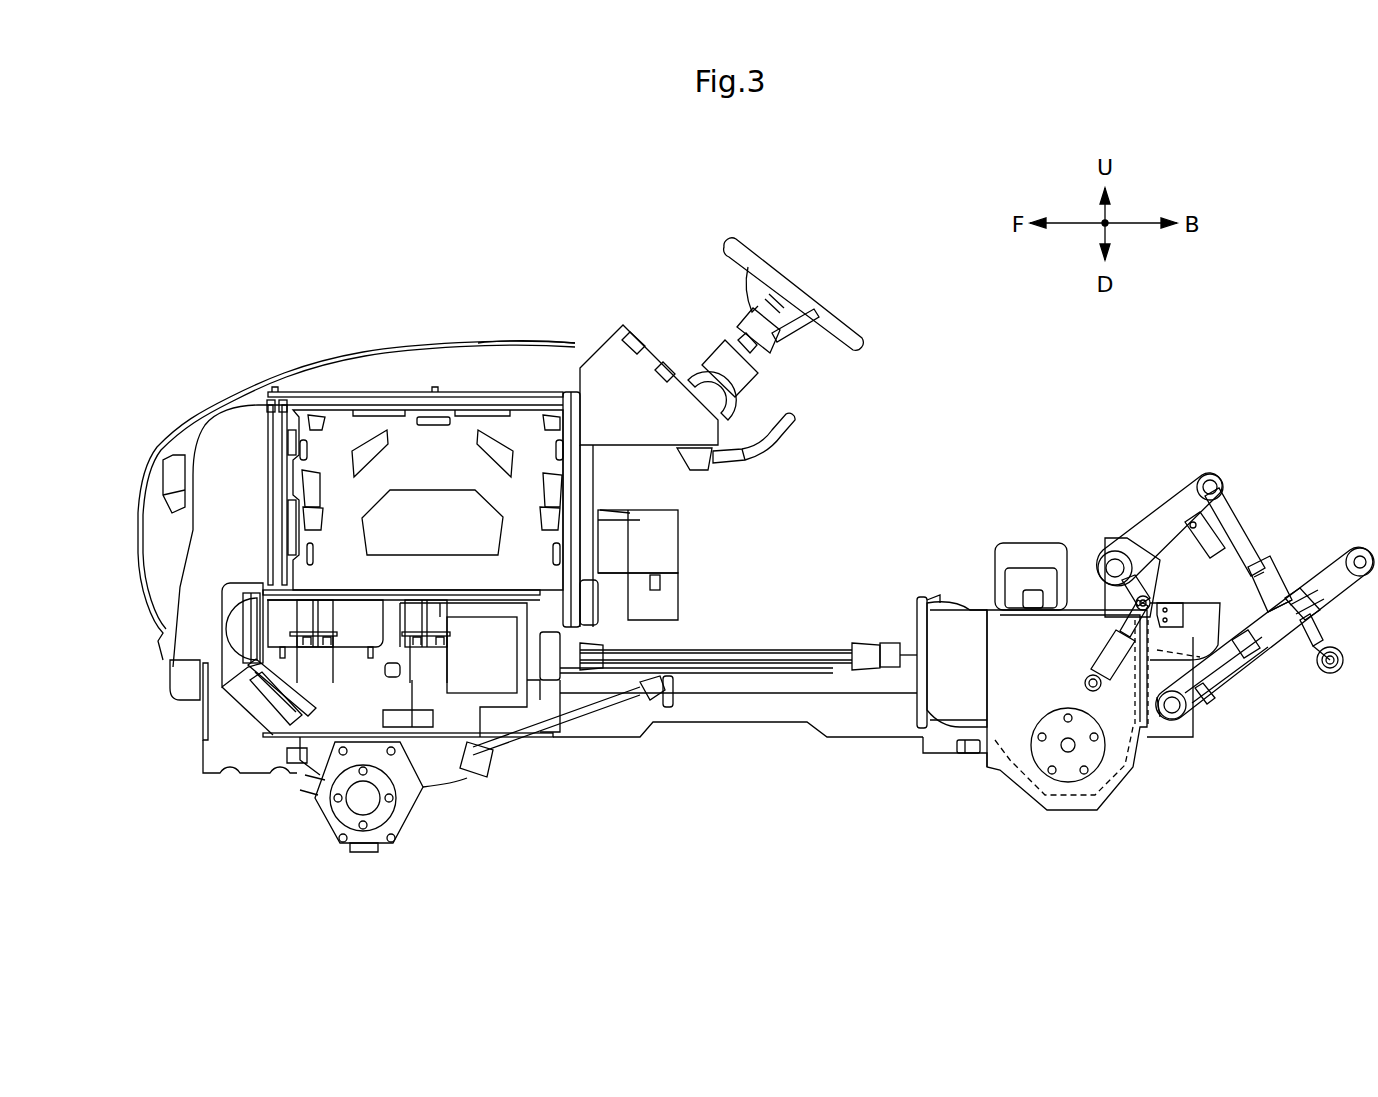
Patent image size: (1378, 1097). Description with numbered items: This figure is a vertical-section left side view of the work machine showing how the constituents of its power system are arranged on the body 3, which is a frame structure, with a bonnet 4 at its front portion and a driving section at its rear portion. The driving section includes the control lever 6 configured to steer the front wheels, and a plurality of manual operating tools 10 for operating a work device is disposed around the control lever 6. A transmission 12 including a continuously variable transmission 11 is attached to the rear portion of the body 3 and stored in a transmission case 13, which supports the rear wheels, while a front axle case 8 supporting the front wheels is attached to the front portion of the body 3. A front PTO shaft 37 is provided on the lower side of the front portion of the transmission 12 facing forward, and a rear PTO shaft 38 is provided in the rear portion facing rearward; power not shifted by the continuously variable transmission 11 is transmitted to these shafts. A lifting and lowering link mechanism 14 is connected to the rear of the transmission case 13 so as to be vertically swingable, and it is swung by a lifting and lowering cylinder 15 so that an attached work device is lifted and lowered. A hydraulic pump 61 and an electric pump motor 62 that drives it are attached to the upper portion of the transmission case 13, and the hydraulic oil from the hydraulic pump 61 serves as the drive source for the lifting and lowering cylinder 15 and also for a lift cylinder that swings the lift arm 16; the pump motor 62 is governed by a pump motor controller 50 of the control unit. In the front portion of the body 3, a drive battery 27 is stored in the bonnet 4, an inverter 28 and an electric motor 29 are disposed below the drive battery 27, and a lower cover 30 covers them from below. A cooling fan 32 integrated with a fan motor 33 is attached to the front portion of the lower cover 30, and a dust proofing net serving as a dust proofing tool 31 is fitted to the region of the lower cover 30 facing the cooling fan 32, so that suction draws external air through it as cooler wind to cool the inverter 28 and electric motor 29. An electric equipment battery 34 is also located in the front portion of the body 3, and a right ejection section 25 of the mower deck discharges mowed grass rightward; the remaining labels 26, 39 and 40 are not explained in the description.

The body 3 is at (762, 740).
The bonnet 4 is at (357, 335).
The control lever 6 is at (793, 293).
The front axle case 8 is at (340, 770).
The manual operating tools 10 is at (790, 455).
The continuously variable transmission 11 is at (957, 705).
The transmission 12 is at (1015, 745).
The transmission case 13 is at (1120, 785).
The lifting and lowering link mechanism 14 is at (1255, 490).
The lifting and lowering cylinder 15 is at (1115, 650).
The lift arm 16 is at (1240, 532).
The right ejection section 25 is at (310, 655).
The lower frame member 26 is at (480, 600).
The drive battery 27 is at (460, 430).
The inverter 28 is at (375, 605).
The electric motor 29 is at (497, 665).
The lower cover 30 is at (455, 667).
The dust proofing tool 31 is at (228, 590).
The cooling fan 32 is at (572, 465).
The fan motor 33 is at (235, 630).
The electric equipment battery 34 is at (620, 546).
The front PTO shaft 37 is at (965, 755).
The rear PTO shaft 38 is at (1233, 672).
The grille 39 is at (163, 480).
The hood top plate 40 is at (478, 343).
The pump motor controller 50 is at (425, 400).
The hydraulic pump 61 is at (1020, 578).
The pump motor 62 is at (1040, 553).